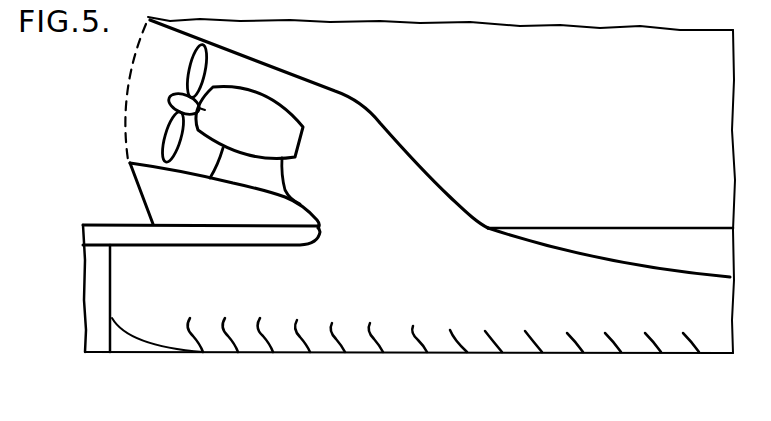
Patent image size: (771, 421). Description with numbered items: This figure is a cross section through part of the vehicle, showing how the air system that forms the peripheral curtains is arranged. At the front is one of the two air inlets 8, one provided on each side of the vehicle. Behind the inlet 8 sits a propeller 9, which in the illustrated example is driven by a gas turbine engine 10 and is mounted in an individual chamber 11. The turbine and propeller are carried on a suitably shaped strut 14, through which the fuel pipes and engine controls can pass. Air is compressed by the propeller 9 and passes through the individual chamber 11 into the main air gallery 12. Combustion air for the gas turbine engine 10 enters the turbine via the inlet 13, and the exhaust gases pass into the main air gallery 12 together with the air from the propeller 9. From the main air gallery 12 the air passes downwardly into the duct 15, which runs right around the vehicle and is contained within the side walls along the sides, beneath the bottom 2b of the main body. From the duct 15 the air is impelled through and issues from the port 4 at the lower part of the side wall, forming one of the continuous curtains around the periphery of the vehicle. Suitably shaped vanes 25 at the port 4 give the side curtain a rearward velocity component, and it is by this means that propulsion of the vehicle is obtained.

The port 4 is at (362, 340).
The air inlet 8 is at (128, 65).
The propeller 9 is at (192, 58).
The gas turbine engine 10 is at (285, 123).
The individual chamber 11 is at (200, 156).
The main air gallery 12 is at (408, 165).
The inlet 13 is at (203, 107).
The strut 14 is at (243, 167).
The duct 15 is at (643, 282).
The bottom 2b is at (610, 227).
The vane 25 is at (458, 332).